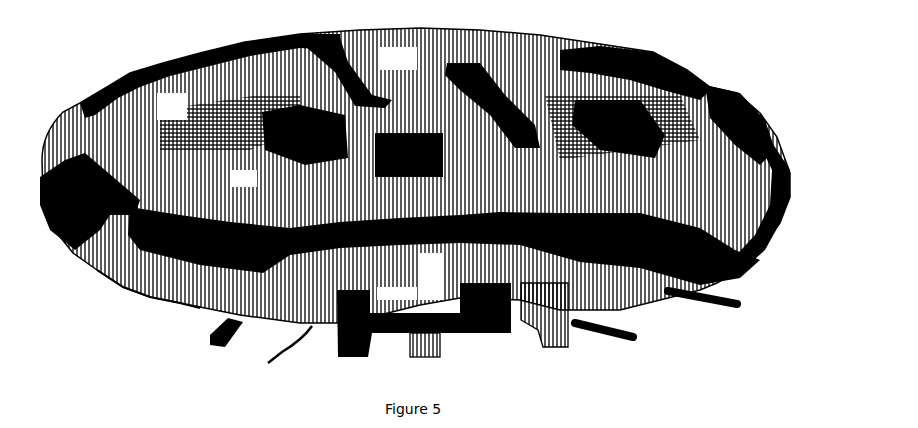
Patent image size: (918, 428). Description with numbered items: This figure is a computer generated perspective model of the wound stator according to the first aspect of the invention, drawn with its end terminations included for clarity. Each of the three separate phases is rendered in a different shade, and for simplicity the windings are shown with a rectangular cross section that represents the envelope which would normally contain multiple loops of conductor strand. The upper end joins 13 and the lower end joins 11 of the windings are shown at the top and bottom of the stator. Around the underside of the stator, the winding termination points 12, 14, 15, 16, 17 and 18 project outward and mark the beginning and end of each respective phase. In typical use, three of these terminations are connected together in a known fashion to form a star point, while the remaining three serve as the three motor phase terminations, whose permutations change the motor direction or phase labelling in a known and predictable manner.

The lower end join 11 is at (163, 316).
The winding termination point 12 is at (203, 348).
The upper end join 13 is at (283, 357).
The winding termination point 14 is at (333, 366).
The winding termination point 15 is at (440, 362).
The winding termination point 16 is at (560, 360).
The winding termination point 17 is at (642, 349).
The winding termination point 18 is at (739, 317).